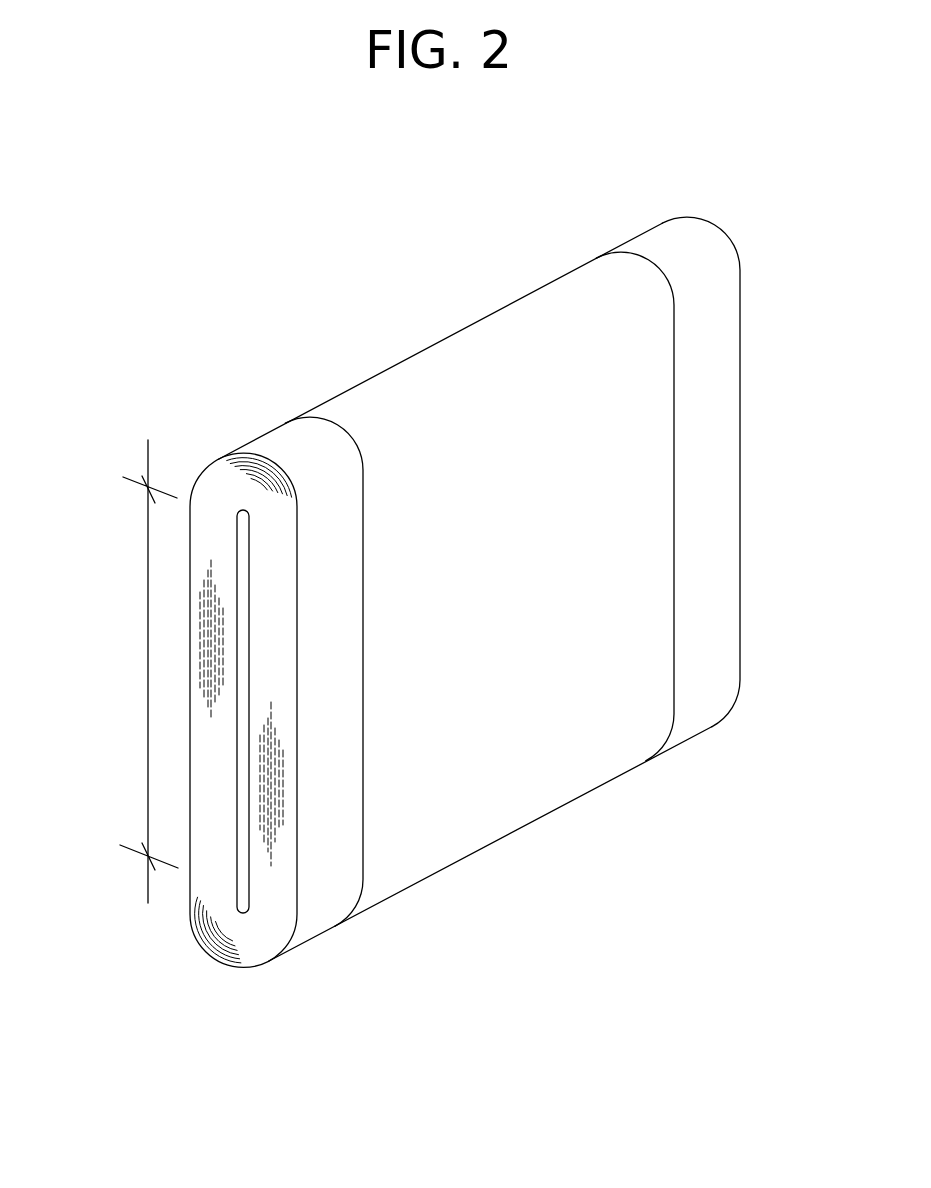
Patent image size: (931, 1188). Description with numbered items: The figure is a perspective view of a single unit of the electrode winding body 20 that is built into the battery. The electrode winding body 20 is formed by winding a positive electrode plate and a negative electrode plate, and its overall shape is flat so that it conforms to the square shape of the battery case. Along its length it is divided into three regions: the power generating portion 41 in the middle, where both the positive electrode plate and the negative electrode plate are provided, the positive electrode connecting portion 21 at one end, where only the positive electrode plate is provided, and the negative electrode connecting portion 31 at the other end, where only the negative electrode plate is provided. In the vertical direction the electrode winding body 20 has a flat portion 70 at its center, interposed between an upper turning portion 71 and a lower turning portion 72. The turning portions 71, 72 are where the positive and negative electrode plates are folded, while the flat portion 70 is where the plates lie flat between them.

The electrode winding body 20 is at (387, 282).
The positive electrode connecting portion 21 is at (322, 903).
The negative electrode connecting portion 31 is at (708, 710).
The power generating portion 41 is at (517, 785).
The flat portion 70 is at (126, 691).
The upper turning portion 71 is at (126, 464).
The lower turning portion 72 is at (128, 899).